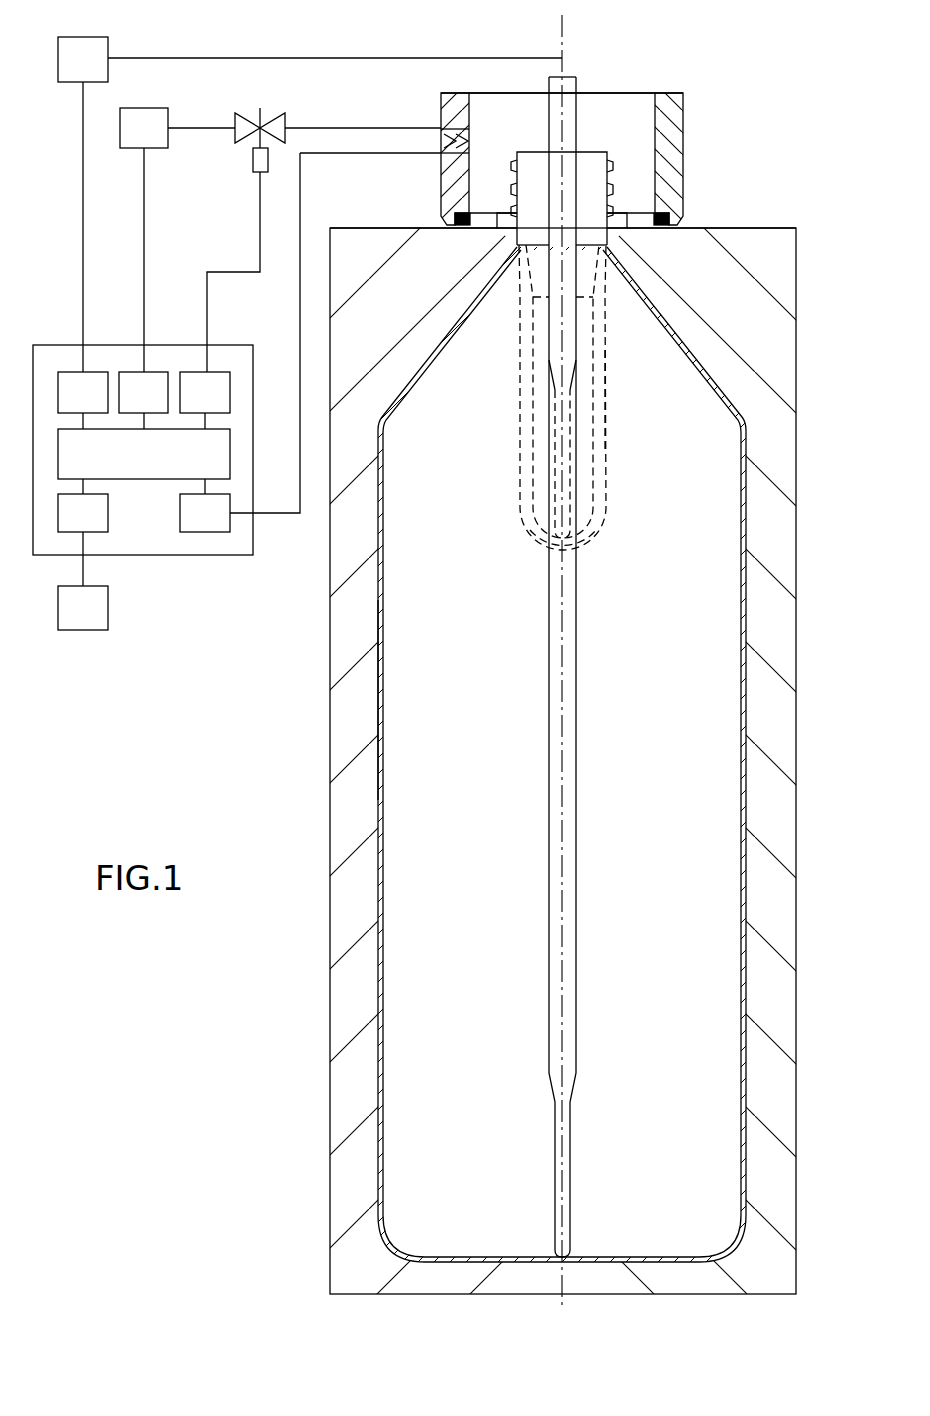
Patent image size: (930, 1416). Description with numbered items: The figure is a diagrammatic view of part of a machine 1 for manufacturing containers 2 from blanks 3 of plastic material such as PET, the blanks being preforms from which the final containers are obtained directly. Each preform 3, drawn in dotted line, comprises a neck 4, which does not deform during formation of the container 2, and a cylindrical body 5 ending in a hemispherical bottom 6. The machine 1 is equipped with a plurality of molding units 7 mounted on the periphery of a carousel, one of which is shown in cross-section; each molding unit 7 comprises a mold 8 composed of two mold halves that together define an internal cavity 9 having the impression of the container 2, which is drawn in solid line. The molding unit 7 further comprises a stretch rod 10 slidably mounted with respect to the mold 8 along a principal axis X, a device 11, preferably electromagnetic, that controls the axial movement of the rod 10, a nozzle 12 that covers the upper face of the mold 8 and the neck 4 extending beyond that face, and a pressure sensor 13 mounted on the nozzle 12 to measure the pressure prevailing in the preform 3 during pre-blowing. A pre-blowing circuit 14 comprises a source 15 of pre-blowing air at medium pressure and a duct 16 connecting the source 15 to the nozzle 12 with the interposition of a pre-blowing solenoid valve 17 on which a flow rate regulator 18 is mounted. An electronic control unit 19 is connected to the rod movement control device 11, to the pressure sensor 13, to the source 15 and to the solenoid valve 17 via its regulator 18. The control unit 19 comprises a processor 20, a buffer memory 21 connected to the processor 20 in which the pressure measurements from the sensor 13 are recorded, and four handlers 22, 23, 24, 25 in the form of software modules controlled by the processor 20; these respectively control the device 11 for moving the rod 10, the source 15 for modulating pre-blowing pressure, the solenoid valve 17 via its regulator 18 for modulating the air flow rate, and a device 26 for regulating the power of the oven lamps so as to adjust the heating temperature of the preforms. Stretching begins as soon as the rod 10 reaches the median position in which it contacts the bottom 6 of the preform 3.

The machine 1 is at (215, 45).
The container 2 is at (742, 658).
The preform 3 is at (606, 486).
The neck 4 is at (610, 162).
The cylindrical body 5 is at (598, 413).
The hemispherical bottom 6 is at (590, 548).
The molding unit 7 is at (756, 143).
The mold 8 is at (750, 238).
The internal cavity 9 is at (383, 678).
The stretch rod 10 is at (557, 137).
The rod movement control device 11 is at (97, 72).
The nozzle 12 is at (678, 121).
The pressure sensor 13 is at (441, 160).
The pre-blowing circuit 14 is at (197, 128).
The source of pre-blowing fluid 15 is at (158, 140).
The duct 16 is at (352, 128).
The pre-blowing solenoid valve 17 is at (275, 114).
The flow rate regulator 18 is at (253, 160).
The control unit 19 is at (163, 556).
The processor 20 is at (158, 467).
The buffer memory 21 is at (219, 526).
The handler 22 is at (97, 405).
The handler 23 is at (158, 405).
The handler 24 is at (219, 405).
The handler 25 is at (97, 526).
The oven lamp power regulating device 26 is at (97, 621).
The principal axis X is at (565, 915).